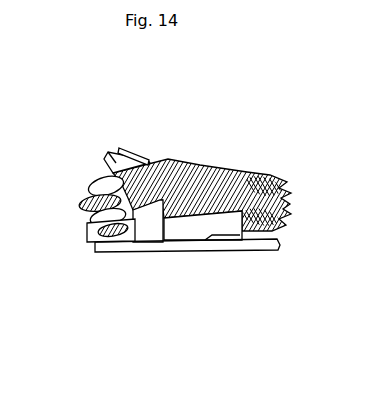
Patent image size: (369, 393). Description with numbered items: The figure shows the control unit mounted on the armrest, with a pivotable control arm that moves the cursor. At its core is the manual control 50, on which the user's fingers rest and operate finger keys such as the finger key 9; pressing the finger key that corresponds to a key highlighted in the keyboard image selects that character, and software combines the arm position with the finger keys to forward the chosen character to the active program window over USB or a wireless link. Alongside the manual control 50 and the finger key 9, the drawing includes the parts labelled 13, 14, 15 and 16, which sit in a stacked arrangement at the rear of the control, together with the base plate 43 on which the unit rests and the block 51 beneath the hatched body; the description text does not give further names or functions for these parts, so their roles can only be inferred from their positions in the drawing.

The finger key 9 is at (134, 150).
The first roller 13 is at (97, 178).
The second roller 14 is at (86, 198).
The third roller 15 is at (90, 214).
The support block 16 is at (88, 236).
The base plate 43 is at (176, 246).
The manual control 50 is at (109, 153).
The housing block 51 is at (203, 222).